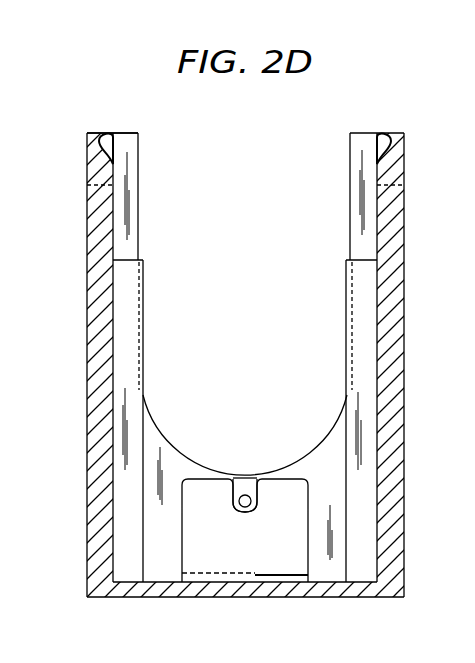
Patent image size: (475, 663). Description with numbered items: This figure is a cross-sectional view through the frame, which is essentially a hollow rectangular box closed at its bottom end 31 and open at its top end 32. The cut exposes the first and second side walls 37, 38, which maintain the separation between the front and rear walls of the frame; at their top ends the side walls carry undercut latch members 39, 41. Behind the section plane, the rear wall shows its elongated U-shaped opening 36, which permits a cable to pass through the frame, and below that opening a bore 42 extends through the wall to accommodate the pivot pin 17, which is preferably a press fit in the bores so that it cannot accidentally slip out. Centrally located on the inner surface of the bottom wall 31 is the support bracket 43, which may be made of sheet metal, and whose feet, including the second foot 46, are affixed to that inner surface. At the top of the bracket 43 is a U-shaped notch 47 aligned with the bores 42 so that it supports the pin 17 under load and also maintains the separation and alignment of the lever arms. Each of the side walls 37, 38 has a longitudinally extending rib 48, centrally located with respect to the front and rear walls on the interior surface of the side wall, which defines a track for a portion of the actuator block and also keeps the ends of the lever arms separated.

The pivot pin 17 is at (248, 478).
The bottom end 31 is at (158, 581).
The top end 32 is at (110, 133).
The U-shaped opening 36 is at (258, 170).
The first side wall 37 is at (404, 252).
The second side wall 38 is at (87, 280).
The undercut latch member 39 is at (391, 148).
The undercut latch member 41 is at (100, 153).
The bore 42 is at (255, 508).
The support bracket 43 is at (302, 505).
The second foot 46 is at (245, 576).
The U-shaped notch 47 is at (237, 478).
The rib 48 is at (143, 357).